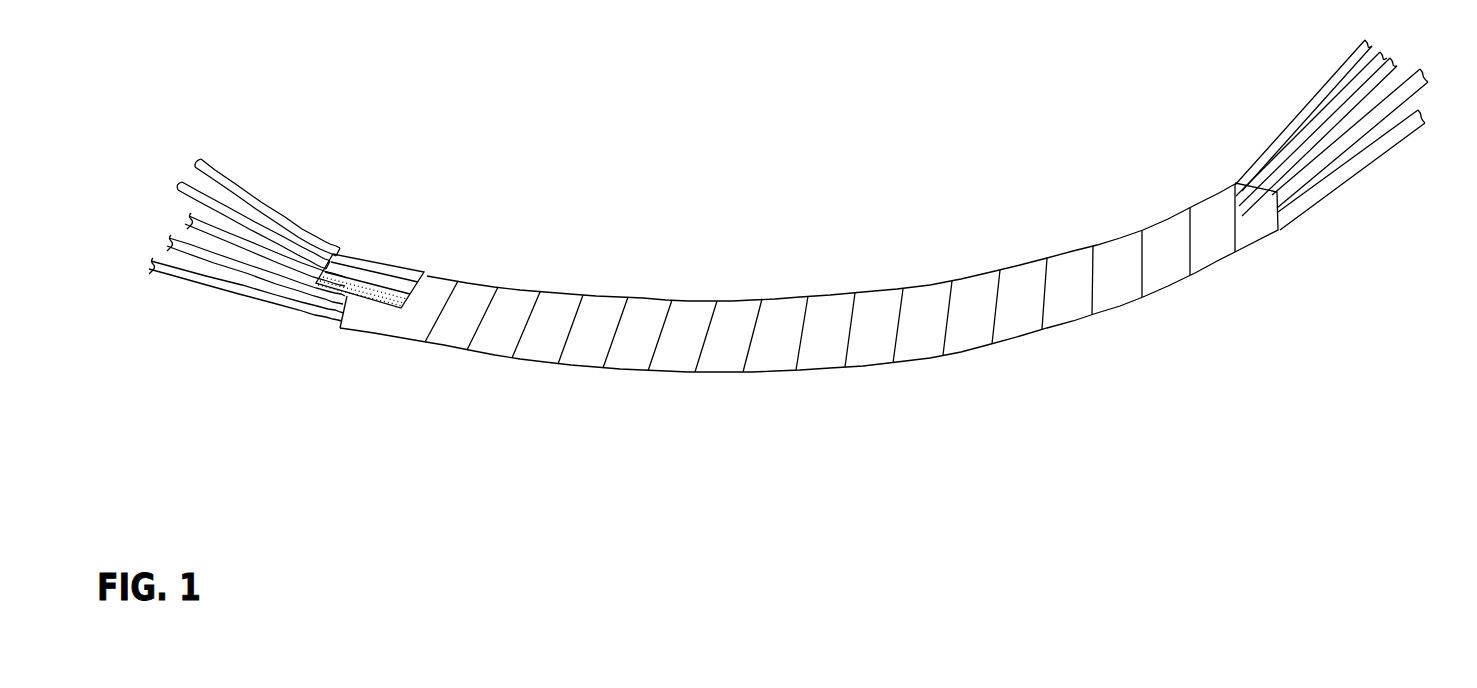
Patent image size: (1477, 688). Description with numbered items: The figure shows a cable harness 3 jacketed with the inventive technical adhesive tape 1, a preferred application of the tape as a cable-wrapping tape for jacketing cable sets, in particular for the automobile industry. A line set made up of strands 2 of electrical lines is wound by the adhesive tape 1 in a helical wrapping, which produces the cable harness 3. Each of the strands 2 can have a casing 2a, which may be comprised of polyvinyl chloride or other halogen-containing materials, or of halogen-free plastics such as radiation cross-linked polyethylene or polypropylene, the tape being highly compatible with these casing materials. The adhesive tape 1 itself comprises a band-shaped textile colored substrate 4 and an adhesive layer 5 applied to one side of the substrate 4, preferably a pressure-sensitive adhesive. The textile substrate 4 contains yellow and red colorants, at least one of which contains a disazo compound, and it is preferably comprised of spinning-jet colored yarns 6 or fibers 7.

The adhesive tape 1 is at (770, 367).
The strands 2 is at (185, 240).
The casing 2a is at (210, 170).
The cable harness 3 is at (565, 410).
The textile colored substrate 4 is at (394, 233).
The adhesive layer 5 is at (343, 280).
The spinning-jet colored yarns 6 is at (370, 281).
The fibers 7 is at (367, 283).